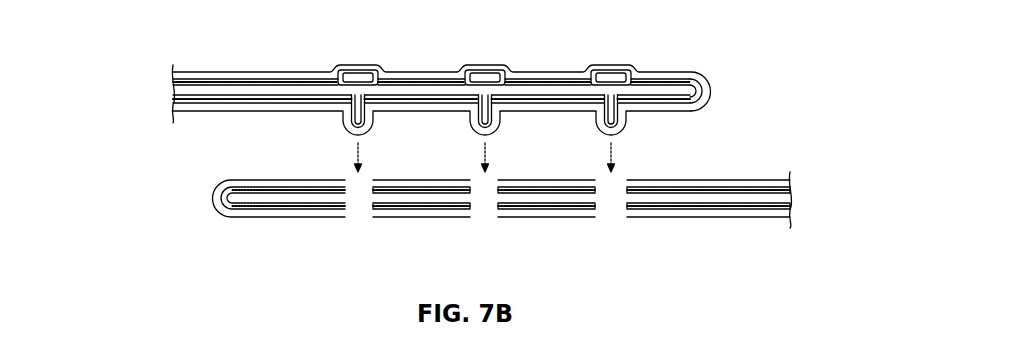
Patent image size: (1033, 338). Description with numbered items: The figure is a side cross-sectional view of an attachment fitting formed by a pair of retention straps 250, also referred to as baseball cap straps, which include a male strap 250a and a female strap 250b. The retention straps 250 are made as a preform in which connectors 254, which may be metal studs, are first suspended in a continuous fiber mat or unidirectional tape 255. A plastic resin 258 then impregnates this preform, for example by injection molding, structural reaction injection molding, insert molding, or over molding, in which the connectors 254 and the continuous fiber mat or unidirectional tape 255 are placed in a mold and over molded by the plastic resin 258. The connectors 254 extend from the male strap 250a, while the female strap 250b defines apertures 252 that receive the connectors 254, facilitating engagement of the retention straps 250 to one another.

The retention straps 250 is at (158, 153).
The male strap 250a is at (235, 72).
The female strap 250b is at (283, 218).
The apertures 252 is at (358, 210).
The connectors 254 is at (358, 78).
The continuous fiber mat or unidirectional tape 255 is at (212, 88).
The plastic resin 258 is at (282, 112).